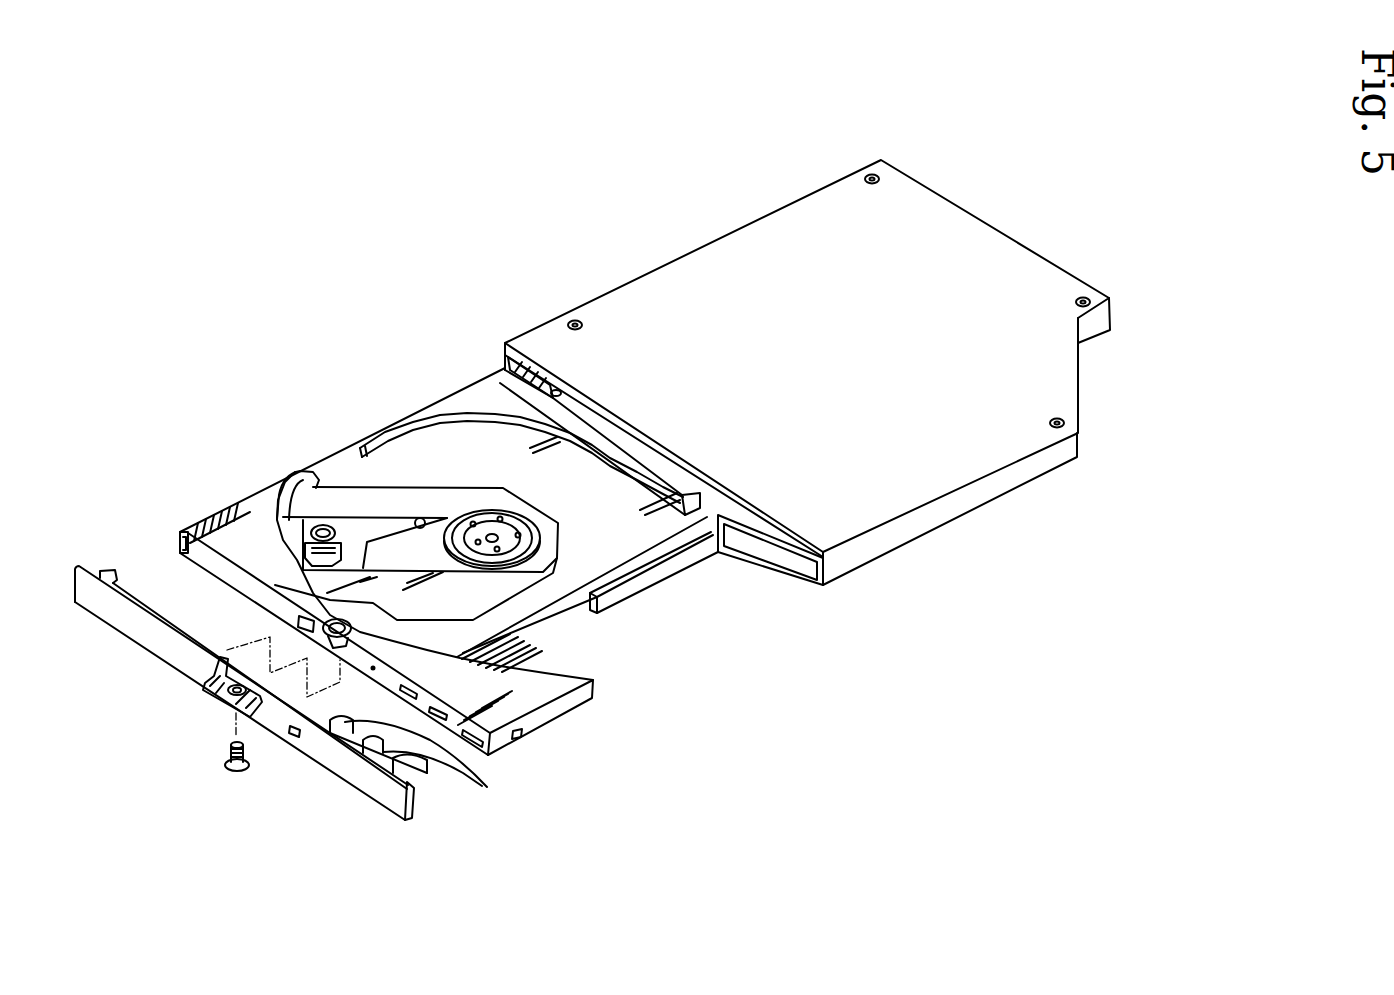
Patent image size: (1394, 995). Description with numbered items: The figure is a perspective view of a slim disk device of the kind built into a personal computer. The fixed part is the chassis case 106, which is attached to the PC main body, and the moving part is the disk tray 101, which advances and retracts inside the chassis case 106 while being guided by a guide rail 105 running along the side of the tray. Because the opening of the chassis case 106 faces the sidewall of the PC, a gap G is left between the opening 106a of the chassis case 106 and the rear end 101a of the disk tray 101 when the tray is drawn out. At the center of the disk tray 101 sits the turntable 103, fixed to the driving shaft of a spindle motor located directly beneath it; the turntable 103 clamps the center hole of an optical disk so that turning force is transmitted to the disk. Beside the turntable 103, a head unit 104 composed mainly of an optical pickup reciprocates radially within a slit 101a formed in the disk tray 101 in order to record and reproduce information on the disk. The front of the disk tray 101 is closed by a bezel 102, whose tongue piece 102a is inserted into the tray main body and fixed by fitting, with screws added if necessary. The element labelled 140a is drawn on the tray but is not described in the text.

The disk tray 101 is at (381, 467).
The slit / rear end of disk tray 101a is at (500, 387).
The bezel 102 is at (340, 760).
The tongue piece 102a is at (117, 573).
The turntable 103 is at (530, 530).
The head unit 104 is at (312, 540).
The guide rail 105 is at (365, 448).
The chassis case 106 is at (712, 276).
The opening of chassis case 106a is at (720, 503).
The guide boss 140a is at (275, 546).
The gap G is at (647, 438).